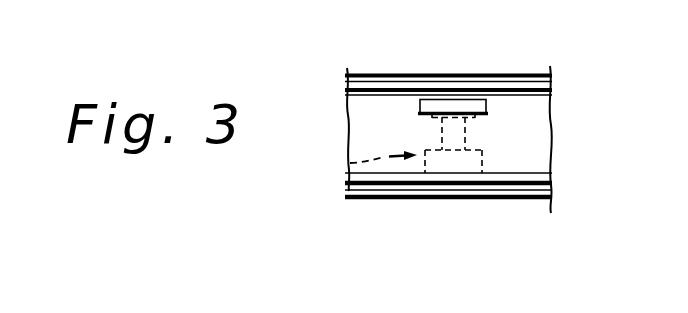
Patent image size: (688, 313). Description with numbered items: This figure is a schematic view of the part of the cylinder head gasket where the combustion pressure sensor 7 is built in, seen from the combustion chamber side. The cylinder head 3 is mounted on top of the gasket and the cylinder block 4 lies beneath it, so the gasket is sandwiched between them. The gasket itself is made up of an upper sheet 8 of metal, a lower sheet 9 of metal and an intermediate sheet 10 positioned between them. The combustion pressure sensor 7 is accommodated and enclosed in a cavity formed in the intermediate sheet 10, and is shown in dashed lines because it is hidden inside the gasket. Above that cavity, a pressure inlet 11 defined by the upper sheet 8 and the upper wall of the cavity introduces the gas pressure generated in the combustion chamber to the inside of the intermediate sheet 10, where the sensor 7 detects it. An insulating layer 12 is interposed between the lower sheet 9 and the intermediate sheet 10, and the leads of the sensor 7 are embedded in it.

The cylinder head 3 is at (476, 68).
The cylinder block 4 is at (480, 229).
The combustion pressure sensor 7 is at (347, 162).
The upper sheet 8 is at (553, 88).
The lower sheet 9 is at (548, 193).
The intermediate sheet 10 is at (535, 133).
The pressure inlet 11 is at (420, 100).
The insulating layer 12 is at (553, 180).